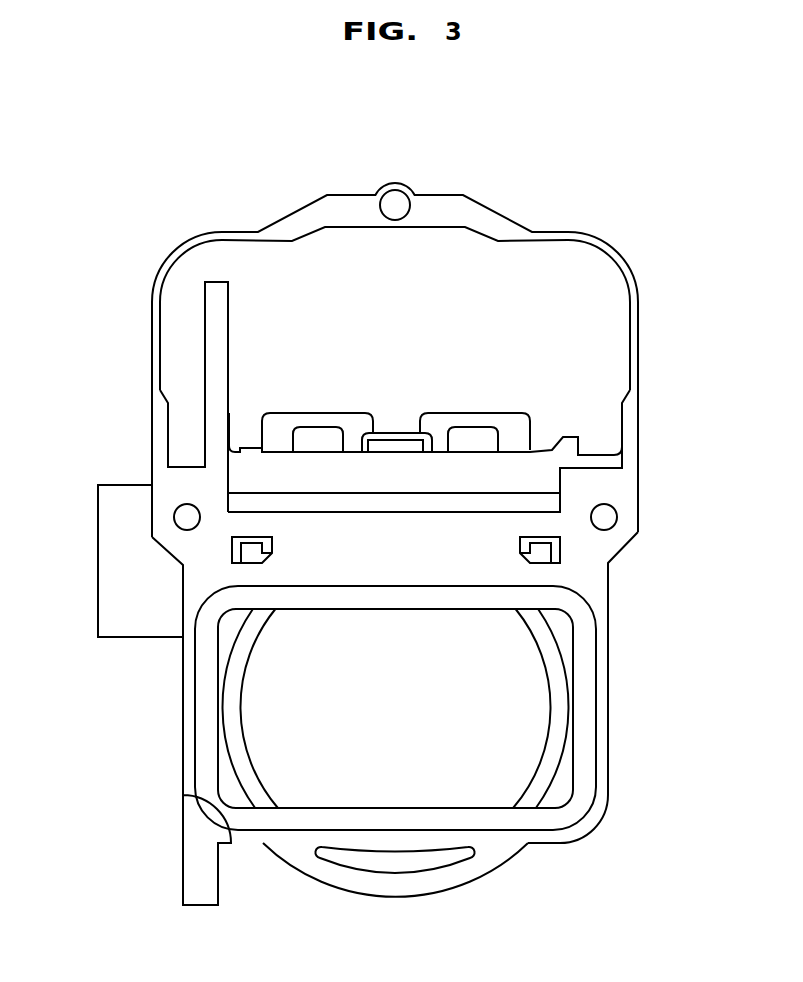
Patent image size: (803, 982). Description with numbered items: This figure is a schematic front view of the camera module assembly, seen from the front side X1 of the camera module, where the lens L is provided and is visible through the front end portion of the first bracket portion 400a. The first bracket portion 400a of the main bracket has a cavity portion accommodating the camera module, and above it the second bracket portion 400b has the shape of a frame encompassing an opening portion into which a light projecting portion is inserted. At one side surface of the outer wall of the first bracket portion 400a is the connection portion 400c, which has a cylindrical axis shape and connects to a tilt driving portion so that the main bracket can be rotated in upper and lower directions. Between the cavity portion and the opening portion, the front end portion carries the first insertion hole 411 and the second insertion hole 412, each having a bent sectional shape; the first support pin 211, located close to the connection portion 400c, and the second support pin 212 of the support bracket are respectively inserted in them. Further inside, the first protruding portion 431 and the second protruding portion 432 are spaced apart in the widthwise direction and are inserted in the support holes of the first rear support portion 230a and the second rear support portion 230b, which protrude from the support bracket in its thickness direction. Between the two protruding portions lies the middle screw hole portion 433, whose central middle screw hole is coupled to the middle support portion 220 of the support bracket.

The first bracket portion 400a is at (489, 845).
The second bracket portion 400b is at (445, 211).
The connection portion 400c is at (118, 492).
The middle support portion 220 is at (383, 433).
The first rear support portion 230a is at (337, 414).
The second rear support portion 230b is at (470, 413).
The first protruding portion 431 is at (315, 433).
The second protruding portion 432 is at (488, 437).
The middle screw hole portion 433 is at (398, 448).
The first support pin 211 is at (232, 547).
The second support pin 212 is at (553, 548).
The first insertion hole 411 is at (255, 555).
The second insertion hole 412 is at (540, 553).
The lens L is at (487, 760).
The front side X1 is at (316, 752).